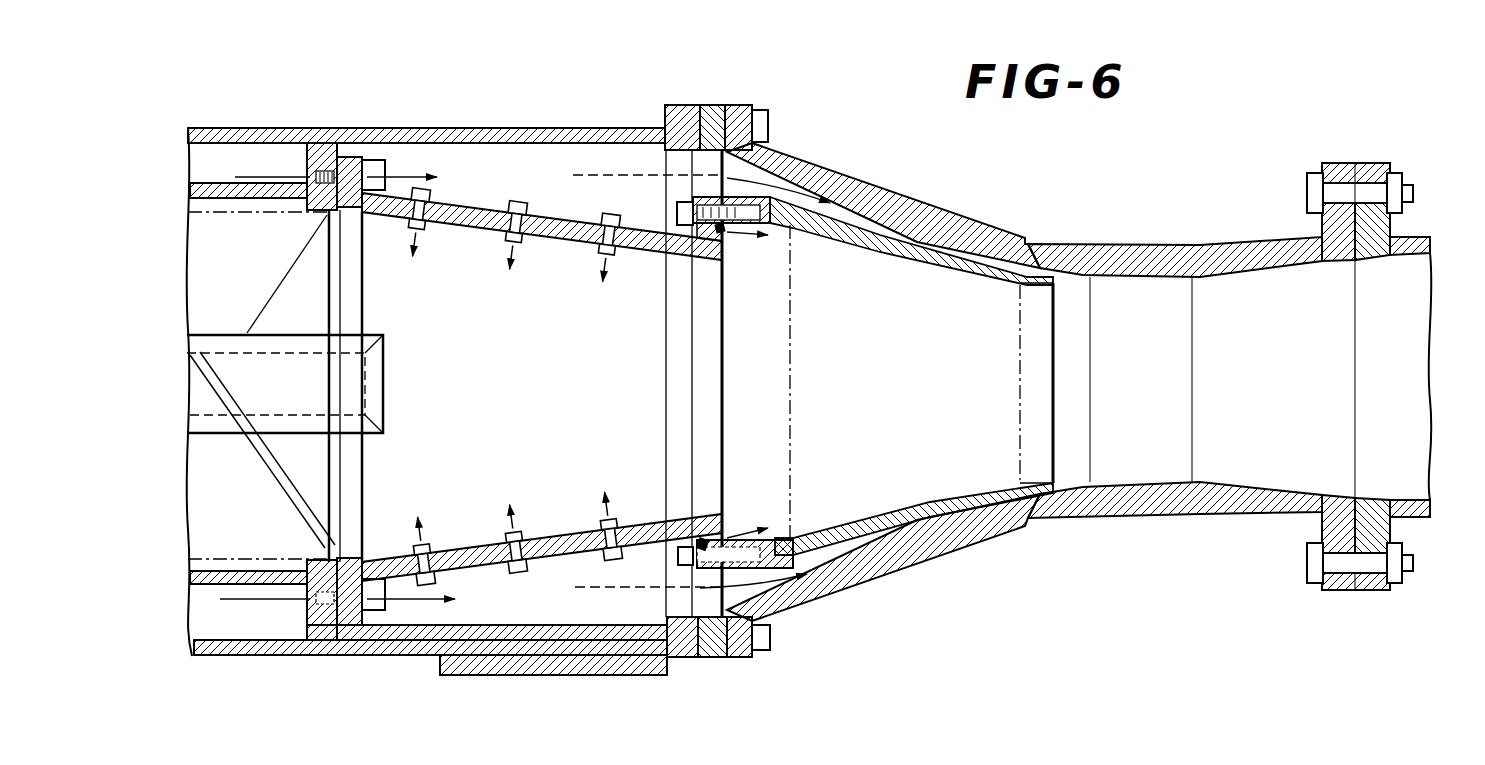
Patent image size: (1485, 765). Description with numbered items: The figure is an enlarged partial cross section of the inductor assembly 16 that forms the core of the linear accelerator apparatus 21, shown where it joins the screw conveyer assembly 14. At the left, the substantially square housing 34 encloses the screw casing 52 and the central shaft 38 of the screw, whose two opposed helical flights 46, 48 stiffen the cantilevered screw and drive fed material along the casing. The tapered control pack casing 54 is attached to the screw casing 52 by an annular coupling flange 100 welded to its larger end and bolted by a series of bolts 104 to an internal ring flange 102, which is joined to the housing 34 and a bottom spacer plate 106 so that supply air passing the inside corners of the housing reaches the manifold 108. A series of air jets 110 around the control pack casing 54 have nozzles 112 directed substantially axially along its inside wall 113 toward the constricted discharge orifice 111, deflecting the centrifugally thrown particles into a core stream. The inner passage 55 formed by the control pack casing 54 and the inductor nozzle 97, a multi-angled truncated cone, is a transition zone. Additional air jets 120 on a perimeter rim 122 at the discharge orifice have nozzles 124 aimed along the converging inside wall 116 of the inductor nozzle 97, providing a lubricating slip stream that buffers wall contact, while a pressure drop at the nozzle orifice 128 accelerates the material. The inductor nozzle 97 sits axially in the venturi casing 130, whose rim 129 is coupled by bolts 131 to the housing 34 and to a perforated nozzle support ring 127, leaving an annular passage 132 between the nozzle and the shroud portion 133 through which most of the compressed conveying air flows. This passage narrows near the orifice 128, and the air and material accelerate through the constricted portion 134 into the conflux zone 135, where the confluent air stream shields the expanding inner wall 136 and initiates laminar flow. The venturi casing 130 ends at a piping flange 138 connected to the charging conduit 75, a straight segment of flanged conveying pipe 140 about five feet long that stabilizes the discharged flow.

The screw conveyer assembly 14 is at (597, 114).
The inductor assembly 16 is at (932, 184).
The linear accelerator apparatus 21 is at (514, 124).
The housing 34 is at (218, 130).
The central shaft 38 is at (216, 427).
The helical flight 46 is at (280, 498).
The helical flight 48 is at (202, 278).
The screw casing 52 is at (258, 188).
The control pack casing 54 is at (547, 221).
The inner passage 55 is at (560, 394).
The charging conduit 75 is at (1378, 593).
The inductor nozzle 97 is at (930, 495).
The annular coupling flange 100 is at (352, 152).
The internal ring flange 102 is at (328, 142).
The bolts 104 is at (378, 165).
The bottom spacer plate 106 is at (483, 630).
The manifold 108 is at (577, 610).
The air jets 110 is at (514, 202).
The constricted discharge orifice 111 is at (712, 400).
The nozzles 112 is at (505, 243).
The inside wall 113 is at (651, 250).
The inside wall 116 is at (973, 488).
The air jets 120 is at (680, 557).
The perimeter rim 122 is at (712, 197).
The nozzles 124 is at (727, 232).
The perforated nozzle support ring 127 is at (681, 660).
The orifice 128 is at (1033, 482).
The rim 129 is at (745, 658).
The venturi casing 130 is at (1004, 220).
The bolts 131 is at (764, 110).
The annular passage 132 is at (860, 217).
The shroud portion 133 is at (870, 578).
The constricted portion 134 is at (1153, 503).
The conflux zone 135 is at (1158, 392).
The wall 136 is at (1235, 478).
The piping flange 138 is at (1343, 592).
The flanged conveying pipe 140 is at (1427, 237).